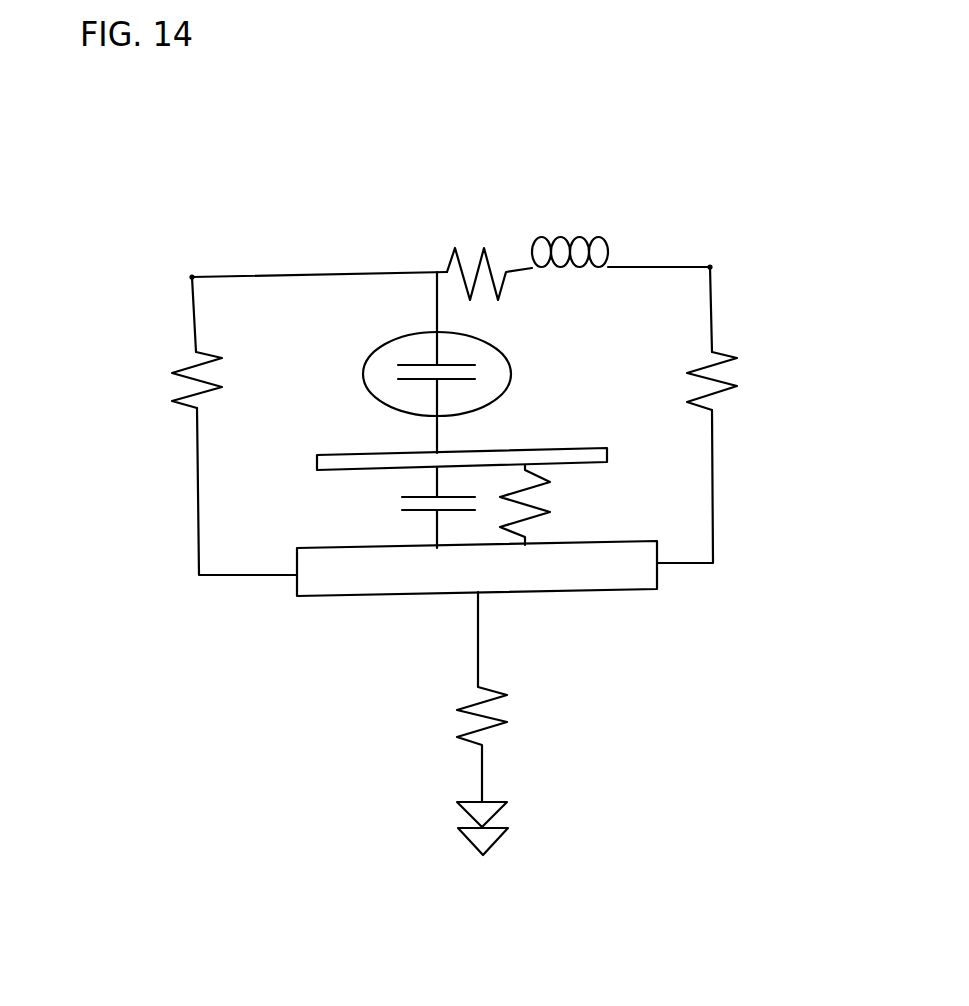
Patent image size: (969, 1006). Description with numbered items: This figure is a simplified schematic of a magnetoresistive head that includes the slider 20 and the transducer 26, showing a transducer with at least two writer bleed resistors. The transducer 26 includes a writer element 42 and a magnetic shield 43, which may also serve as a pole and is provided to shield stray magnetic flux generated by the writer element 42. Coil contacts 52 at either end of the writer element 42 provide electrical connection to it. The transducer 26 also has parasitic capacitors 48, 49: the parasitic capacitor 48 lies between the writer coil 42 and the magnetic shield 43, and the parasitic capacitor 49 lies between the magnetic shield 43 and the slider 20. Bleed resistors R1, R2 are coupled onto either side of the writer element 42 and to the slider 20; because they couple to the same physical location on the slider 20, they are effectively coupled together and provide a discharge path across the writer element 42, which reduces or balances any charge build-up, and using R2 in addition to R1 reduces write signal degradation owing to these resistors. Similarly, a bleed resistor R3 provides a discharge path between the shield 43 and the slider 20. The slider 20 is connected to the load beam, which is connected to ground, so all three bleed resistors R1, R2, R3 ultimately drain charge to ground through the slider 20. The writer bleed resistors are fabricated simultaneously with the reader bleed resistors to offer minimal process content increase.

The slider 20 is at (327, 596).
The transducer 26 is at (143, 507).
The writer element 42 is at (481, 239).
The magnetic shield 43 is at (622, 458).
The parasitic capacitor 48 is at (507, 358).
The parasitic capacitor 49 is at (395, 508).
The coil contacts 52 is at (192, 277).
The bleed resistor R1 is at (215, 380).
The bleed resistor R2 is at (733, 381).
The bleed resistor R3 is at (542, 505).